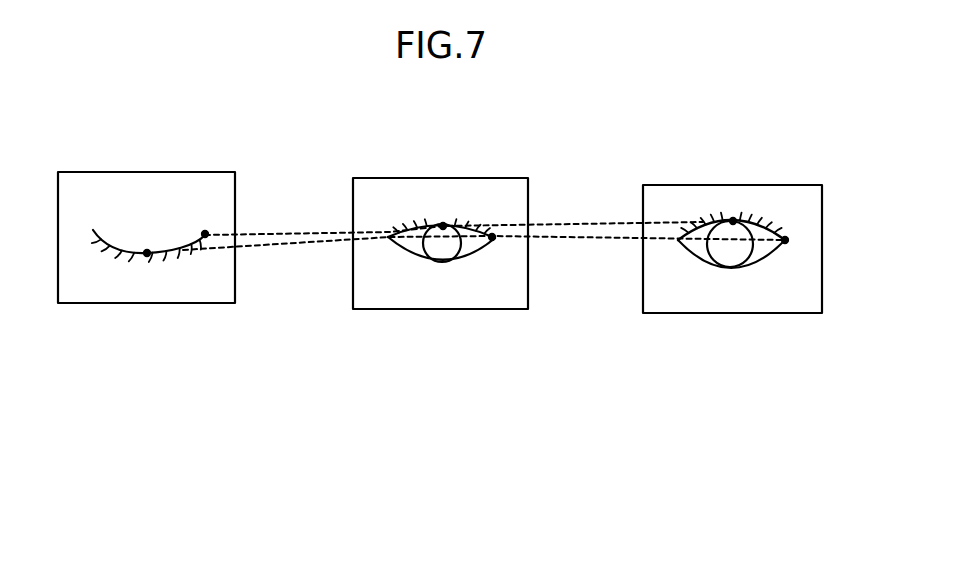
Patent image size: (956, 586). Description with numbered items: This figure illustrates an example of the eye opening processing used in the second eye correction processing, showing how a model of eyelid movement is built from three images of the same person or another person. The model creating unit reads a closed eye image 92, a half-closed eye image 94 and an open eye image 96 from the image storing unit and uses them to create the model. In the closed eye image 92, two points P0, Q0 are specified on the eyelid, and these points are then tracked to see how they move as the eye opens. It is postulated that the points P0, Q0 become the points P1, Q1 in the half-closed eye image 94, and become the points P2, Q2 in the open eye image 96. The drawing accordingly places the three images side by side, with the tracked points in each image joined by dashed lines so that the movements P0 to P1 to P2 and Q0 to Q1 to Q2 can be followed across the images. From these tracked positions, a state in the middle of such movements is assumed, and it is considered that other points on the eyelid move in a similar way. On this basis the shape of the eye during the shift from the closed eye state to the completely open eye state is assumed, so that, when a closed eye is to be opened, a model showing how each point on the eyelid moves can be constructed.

The closed eye image 92 is at (150, 172).
The half-closed eye image 94 is at (447, 178).
The open eye image 96 is at (730, 185).
The eyelid point P0 is at (147, 253).
The eyelid point Q0 is at (205, 233).
The eyelid point P1 is at (443, 225).
The eyelid point Q1 is at (492, 237).
The eyelid point P2 is at (733, 220).
The eyelid point Q2 is at (785, 240).